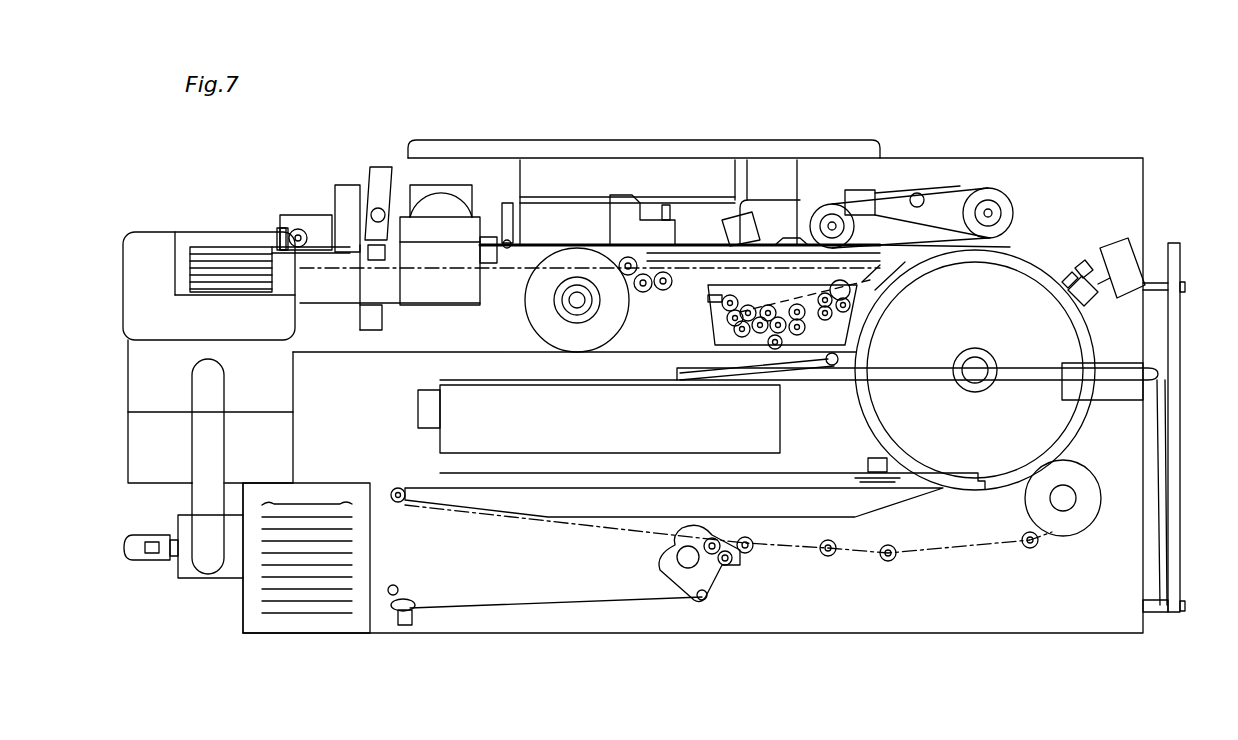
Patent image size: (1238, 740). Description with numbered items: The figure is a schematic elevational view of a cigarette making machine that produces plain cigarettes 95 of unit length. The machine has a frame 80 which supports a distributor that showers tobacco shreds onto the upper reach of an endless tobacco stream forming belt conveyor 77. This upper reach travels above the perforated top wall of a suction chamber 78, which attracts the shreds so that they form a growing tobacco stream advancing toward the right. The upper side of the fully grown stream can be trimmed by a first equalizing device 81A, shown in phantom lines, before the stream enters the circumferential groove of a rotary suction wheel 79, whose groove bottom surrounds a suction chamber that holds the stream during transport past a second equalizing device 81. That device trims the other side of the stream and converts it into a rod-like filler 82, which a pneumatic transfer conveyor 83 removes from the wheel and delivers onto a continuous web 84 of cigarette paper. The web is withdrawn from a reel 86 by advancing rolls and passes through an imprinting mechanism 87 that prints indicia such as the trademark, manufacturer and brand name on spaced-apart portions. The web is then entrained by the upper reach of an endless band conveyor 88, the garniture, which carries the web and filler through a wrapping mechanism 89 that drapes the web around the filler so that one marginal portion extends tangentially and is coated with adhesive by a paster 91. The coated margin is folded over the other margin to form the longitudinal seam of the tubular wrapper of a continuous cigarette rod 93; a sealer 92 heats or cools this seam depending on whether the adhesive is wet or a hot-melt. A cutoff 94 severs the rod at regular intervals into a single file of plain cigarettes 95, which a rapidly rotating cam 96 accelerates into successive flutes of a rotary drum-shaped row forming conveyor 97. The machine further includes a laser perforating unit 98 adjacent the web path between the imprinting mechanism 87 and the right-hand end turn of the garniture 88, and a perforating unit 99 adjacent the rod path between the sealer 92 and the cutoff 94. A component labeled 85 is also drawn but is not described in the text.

The tobacco stream forming belt conveyor 77 is at (935, 554).
The suction chamber 78 is at (855, 500).
The rotary suction wheel 79 is at (1068, 430).
The frame 80 is at (1043, 157).
The second equalizing device 81 is at (1090, 295).
The first equalizing device 81A is at (895, 465).
The rod-like filler 82 is at (1080, 270).
The pneumatic transfer conveyor 83 is at (922, 240).
The continuous web of cigarette paper 84 is at (888, 370).
The base plate 85 is at (574, 426).
The reel 86 is at (1175, 328).
The imprinting mechanism 87 is at (722, 323).
The endless band conveyor (garniture) 88 is at (672, 272).
The wrapping mechanism 89 is at (792, 242).
The paster 91 is at (728, 220).
The sealer 92 is at (640, 225).
The continuous cigarette rod 93 is at (550, 250).
The cutoff 94 is at (430, 228).
The plain cigarettes 95 is at (318, 245).
The rapidly rotating cam 96 is at (300, 229).
The rotary drum-shaped row forming conveyor 97 is at (222, 268).
The perforating unit 98 is at (875, 280).
The perforating unit 99 is at (508, 203).